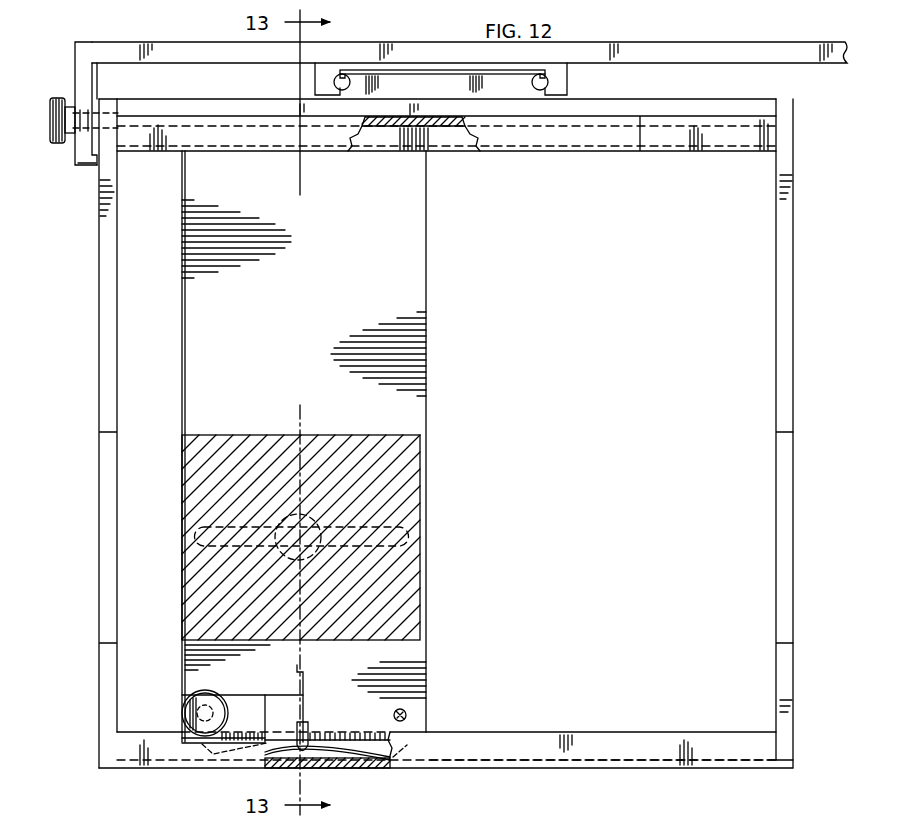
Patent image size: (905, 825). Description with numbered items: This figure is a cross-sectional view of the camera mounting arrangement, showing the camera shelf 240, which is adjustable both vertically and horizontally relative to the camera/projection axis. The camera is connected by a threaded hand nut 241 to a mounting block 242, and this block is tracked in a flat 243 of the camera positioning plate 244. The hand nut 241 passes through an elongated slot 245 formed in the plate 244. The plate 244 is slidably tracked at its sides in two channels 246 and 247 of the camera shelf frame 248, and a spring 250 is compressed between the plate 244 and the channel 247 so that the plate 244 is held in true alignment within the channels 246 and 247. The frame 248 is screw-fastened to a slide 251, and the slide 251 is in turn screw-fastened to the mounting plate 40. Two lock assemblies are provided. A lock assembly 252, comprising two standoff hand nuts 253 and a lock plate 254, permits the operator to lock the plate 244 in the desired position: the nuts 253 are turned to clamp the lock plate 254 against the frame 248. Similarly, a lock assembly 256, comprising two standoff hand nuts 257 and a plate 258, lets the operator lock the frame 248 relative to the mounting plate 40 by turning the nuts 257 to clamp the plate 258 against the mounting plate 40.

The mounting plate 40 is at (724, 60).
The lock plate 258 is at (83, 47).
The standoff hand nut 257 is at (58, 97).
The lock assembly 256 is at (90, 172).
The slide 251 is at (568, 78).
The camera shelf 240 is at (430, 339).
The camera shelf frame 248 is at (108, 178).
The channel 246 is at (557, 126).
The camera positioning plate 244 is at (412, 236).
The mounting block 242 is at (395, 465).
The elongated slot 245 is at (408, 528).
The threaded hand nut 241 is at (305, 553).
The flat 243 is at (182, 636).
The standoff hand nut 253 is at (208, 705).
The lock plate 254 is at (304, 680).
The lock assembly 252 is at (215, 748).
The spring 250 is at (352, 768).
The channel 247 is at (525, 758).